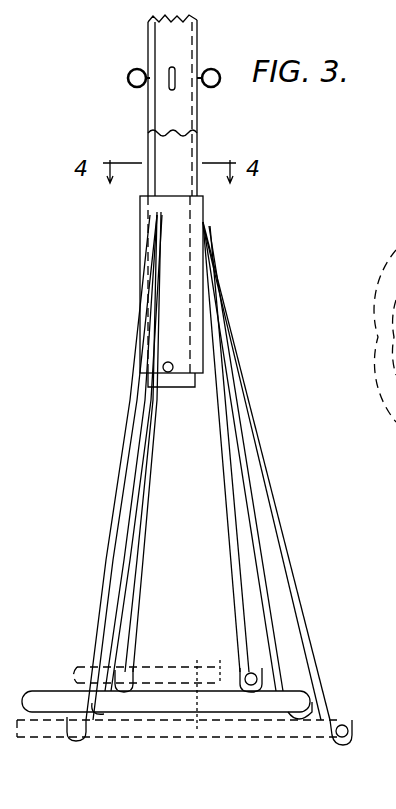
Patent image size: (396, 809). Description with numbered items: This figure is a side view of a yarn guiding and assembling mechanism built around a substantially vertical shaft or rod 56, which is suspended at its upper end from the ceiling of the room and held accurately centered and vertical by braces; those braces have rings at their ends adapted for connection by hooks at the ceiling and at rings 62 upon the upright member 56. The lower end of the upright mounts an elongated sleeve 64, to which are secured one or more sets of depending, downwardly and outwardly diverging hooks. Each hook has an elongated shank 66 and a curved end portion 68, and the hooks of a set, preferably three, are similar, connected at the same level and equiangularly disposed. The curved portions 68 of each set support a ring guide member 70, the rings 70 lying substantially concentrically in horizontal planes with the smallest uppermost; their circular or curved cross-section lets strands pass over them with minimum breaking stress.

The vertical shaft or rod 56 is at (160, 41).
The rings 62 is at (126, 78).
The sleeve 64 is at (160, 202).
The elongated shanks 66 is at (243, 487).
The curved end portions 68 is at (133, 682).
The ring guide member 70 is at (207, 703).